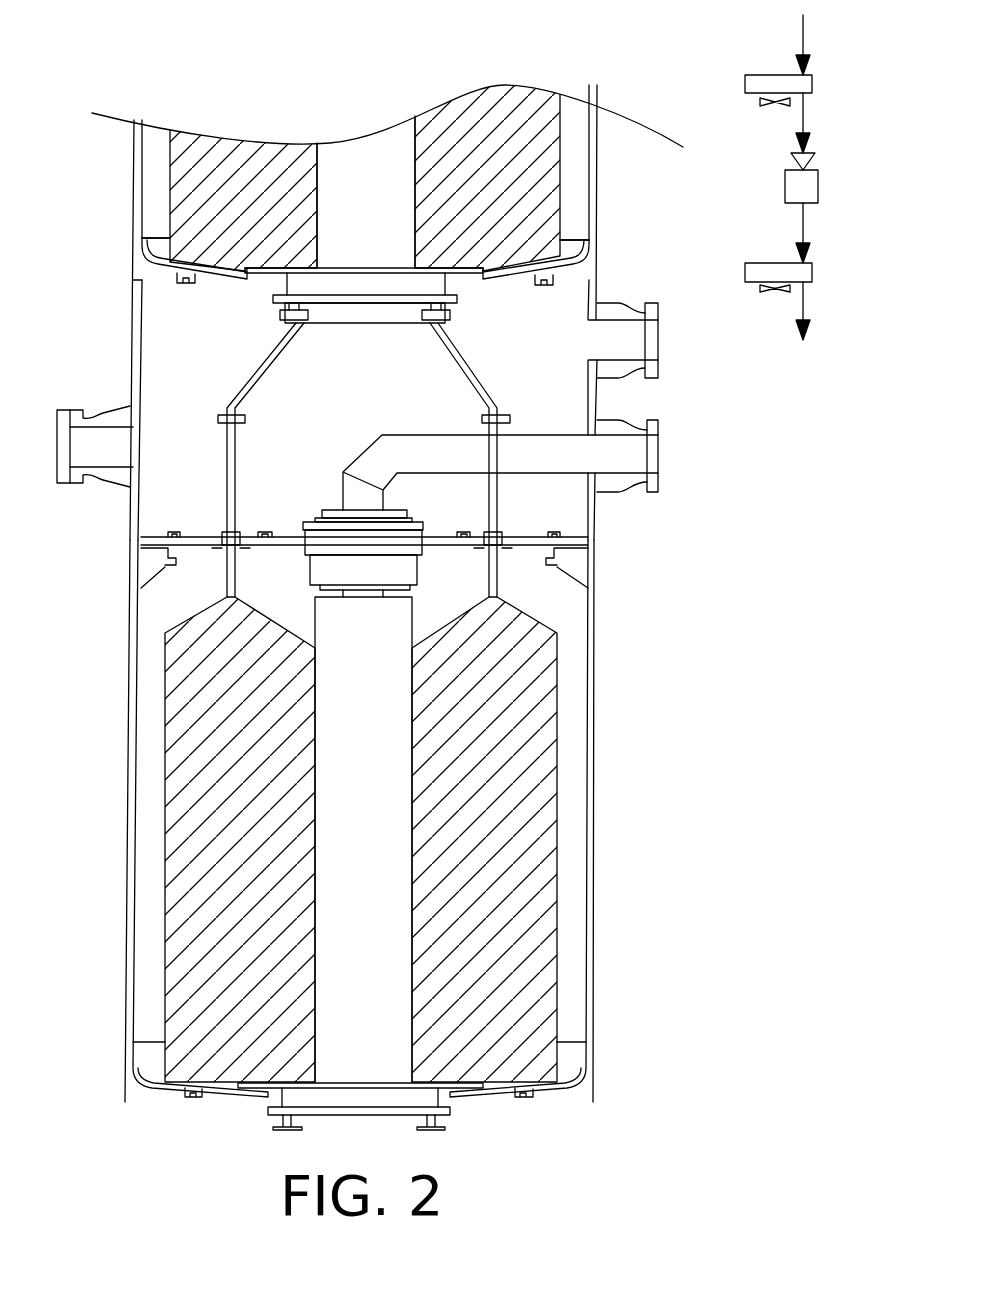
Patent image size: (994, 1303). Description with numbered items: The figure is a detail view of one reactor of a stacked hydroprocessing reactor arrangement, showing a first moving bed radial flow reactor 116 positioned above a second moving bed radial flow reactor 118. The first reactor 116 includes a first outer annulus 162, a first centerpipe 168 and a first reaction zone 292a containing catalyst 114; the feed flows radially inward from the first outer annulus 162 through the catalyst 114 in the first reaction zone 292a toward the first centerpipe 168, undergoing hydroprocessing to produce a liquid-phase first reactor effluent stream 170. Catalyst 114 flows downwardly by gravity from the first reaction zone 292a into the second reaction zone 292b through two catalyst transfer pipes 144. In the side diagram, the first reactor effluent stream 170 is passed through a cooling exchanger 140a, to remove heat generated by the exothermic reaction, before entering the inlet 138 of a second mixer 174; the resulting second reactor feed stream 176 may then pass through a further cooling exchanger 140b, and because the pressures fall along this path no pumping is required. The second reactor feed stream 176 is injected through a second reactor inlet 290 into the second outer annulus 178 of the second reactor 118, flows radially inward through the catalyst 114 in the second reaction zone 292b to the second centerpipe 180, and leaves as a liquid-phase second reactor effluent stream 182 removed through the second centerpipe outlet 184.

The catalyst 114 is at (182, 246).
The first moving bed radial flow reactor 116 is at (600, 193).
The second moving bed radial flow reactor 118 is at (600, 840).
The inlet of the second mixer 138 is at (800, 153).
The cooling exchanger 140a is at (812, 83).
The cooling exchanger 140b is at (812, 272).
The catalyst transfer pipe 144 is at (262, 365).
The first outer annulus 162 is at (150, 216).
The first centerpipe 168 is at (358, 147).
The first reactor effluent stream 170 is at (803, 36).
The second mixer 174 is at (785, 190).
The second reactor feed stream 176 is at (803, 340).
The second outer annulus 178 is at (150, 755).
The second centerpipe 180 is at (345, 698).
The second reactor effluent stream 182 is at (610, 456).
The second centerpipe outlet 184 is at (652, 492).
The second reactor inlet 290 is at (652, 303).
The first reaction zone 292a is at (533, 127).
The second reaction zone 292b is at (535, 672).